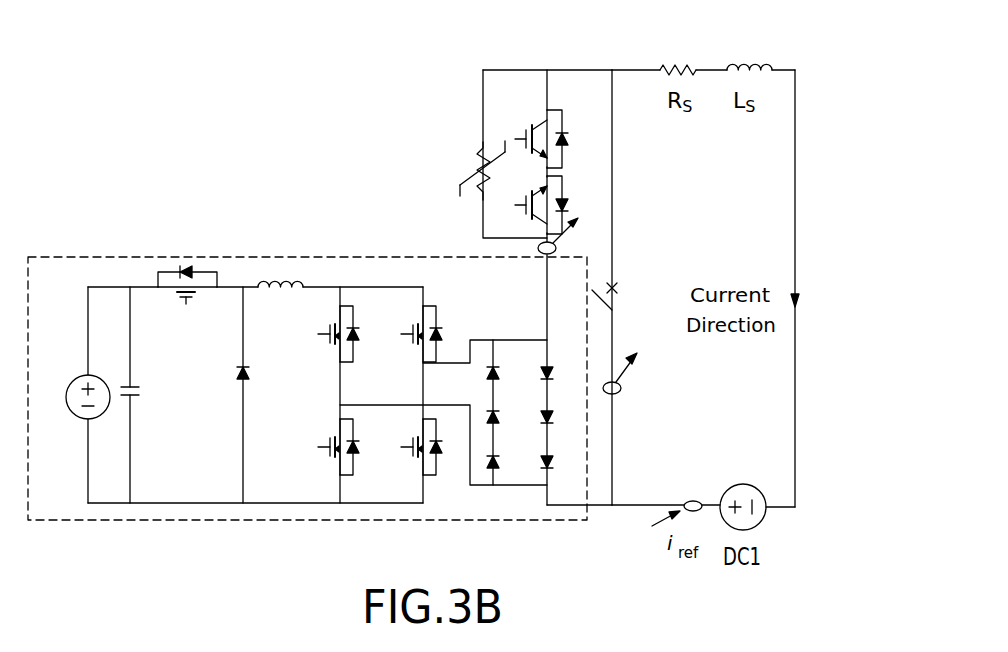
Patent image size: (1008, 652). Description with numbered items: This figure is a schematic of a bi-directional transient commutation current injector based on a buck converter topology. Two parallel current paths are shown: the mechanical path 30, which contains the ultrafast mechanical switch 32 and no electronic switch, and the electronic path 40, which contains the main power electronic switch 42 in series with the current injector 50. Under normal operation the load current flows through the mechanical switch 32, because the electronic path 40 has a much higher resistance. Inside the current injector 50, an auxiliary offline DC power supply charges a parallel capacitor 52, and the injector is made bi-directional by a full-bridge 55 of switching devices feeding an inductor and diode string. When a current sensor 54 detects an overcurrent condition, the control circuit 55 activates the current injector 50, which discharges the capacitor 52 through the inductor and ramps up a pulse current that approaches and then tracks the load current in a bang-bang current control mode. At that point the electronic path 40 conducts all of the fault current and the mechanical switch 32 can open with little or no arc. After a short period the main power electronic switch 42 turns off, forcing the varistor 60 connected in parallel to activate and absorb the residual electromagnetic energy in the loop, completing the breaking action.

The mechanical path 30 is at (612, 157).
The ultrafast mechanical switch 32 is at (615, 298).
The electronic path 40 is at (516, 135).
The main power electronic switch 42 is at (570, 104).
The current injector 50 is at (307, 330).
The capacitor 52 is at (139, 392).
The current sensor 54 is at (618, 393).
The control system or circuit / full-bridge 55 is at (398, 278).
The varistor 60 is at (483, 150).